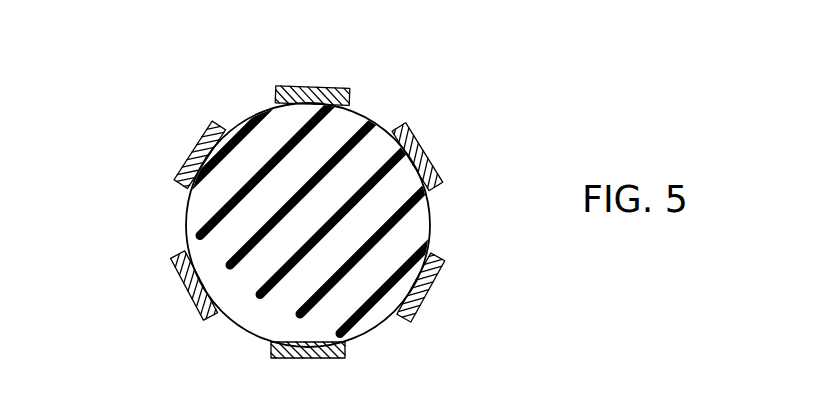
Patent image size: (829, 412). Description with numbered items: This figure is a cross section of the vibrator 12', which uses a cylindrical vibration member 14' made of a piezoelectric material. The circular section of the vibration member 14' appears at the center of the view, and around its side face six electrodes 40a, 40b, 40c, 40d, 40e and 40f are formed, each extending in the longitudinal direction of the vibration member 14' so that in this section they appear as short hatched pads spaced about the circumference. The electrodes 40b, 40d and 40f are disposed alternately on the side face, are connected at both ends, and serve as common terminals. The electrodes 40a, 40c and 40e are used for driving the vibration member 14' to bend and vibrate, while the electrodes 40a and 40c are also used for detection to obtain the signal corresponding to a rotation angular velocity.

The vibrator 12' is at (338, 204).
The vibration member 14' is at (385, 197).
The electrode 40a is at (310, 86).
The electrode 40b is at (428, 150).
The electrode 40c is at (431, 284).
The electrode 40d is at (305, 357).
The electrode 40e is at (181, 287).
The electrode 40f is at (196, 139).